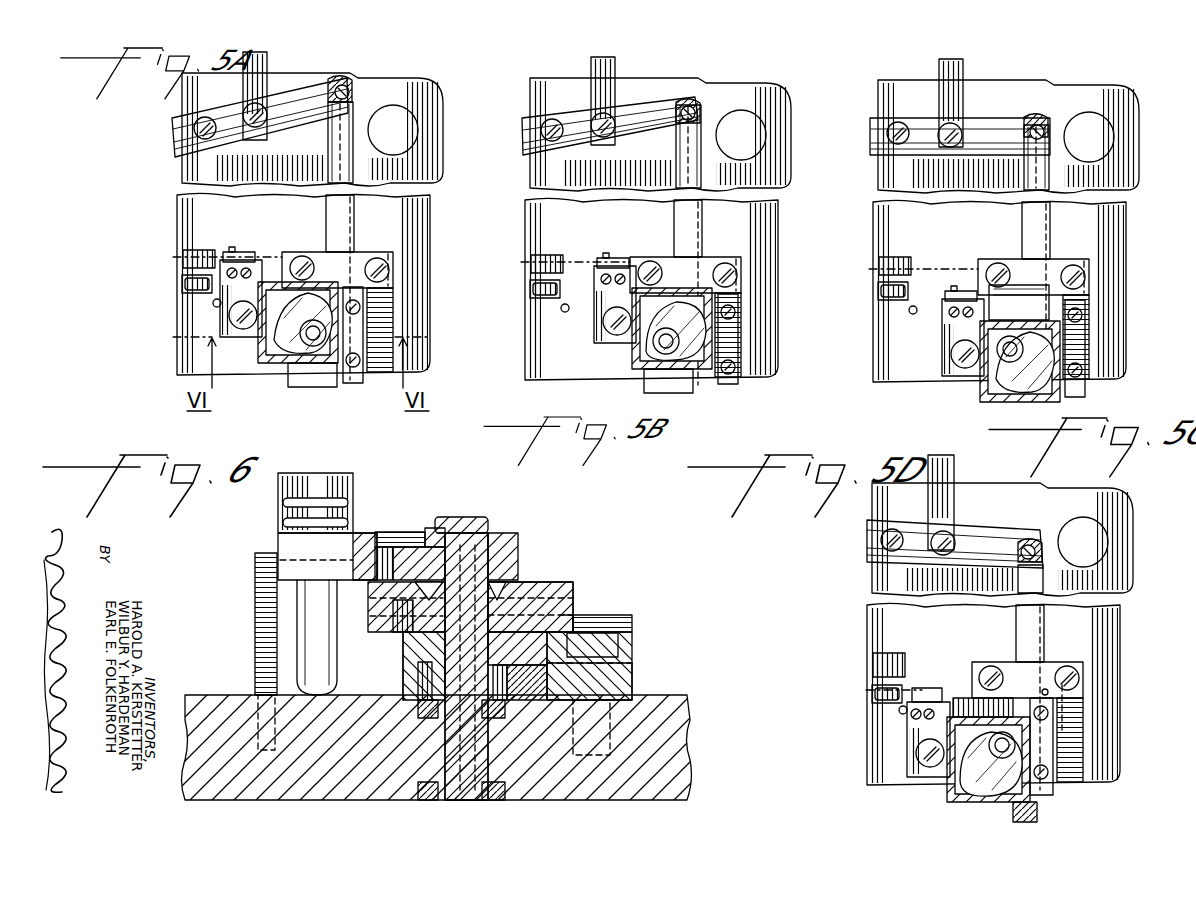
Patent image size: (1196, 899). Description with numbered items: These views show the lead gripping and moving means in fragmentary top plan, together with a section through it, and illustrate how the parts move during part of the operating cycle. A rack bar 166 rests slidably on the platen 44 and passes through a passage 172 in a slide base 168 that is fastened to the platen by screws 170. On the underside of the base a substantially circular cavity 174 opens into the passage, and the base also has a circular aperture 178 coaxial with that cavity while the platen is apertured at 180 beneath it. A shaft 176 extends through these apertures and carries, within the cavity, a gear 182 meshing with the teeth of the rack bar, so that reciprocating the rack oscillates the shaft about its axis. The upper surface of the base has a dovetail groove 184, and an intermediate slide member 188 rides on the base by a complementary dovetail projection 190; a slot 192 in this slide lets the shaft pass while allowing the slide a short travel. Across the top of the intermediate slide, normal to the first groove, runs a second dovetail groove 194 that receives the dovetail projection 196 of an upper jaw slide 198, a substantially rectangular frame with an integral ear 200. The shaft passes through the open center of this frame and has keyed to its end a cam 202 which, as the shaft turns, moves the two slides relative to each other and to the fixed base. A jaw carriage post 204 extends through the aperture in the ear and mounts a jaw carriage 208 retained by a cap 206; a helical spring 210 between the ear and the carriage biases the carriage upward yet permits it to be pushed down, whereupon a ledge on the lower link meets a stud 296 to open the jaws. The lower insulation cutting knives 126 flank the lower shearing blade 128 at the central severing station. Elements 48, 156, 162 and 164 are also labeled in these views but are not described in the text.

In FIG. 5A, the platen 44 is at (190, 191).
In FIG. 5B, the platen 44 is at (634, 229).
In FIG. 5C, the platen 44 is at (986, 231).
In FIG. 5D, the platen 44 is at (979, 634).
In FIG. 6, the platen 44 is at (685, 737).
In FIG. 5A, the bore 48 is at (398, 137).
In FIG. 5B, the bore 48 is at (750, 146).
In FIG. 5C, the bore 48 is at (1098, 147).
In FIG. 5D, the bore 48 is at (1113, 542).
In FIG. 5A, the lower insulation cutting knives 126 is at (180, 280).
In FIG. 5B, the lower insulation cutting knives 126 is at (561, 254).
In FIG. 5C, the lower insulation cutting knives 126 is at (910, 258).
In FIG. 5D, the lower insulation cutting knives 126 is at (904, 658).
In FIG. 5A, the lower shearing blade 128 is at (196, 250).
In FIG. 5B, the lower shearing blade 128 is at (525, 251).
In FIG. 5C, the lower shearing blade 128 is at (875, 252).
In FIG. 5D, the lower shearing blade 128 is at (865, 655).
In FIG. 5A, the post 156 is at (245, 108).
In FIG. 5B, the post 156 is at (584, 101).
In FIG. 5C, the post 156 is at (931, 103).
In FIG. 5D, the post 156 is at (923, 502).
In FIG. 5A, the screw 162 is at (338, 84).
In FIG. 5B, the screw 162 is at (666, 98).
In FIG. 5C, the screw 162 is at (1022, 115).
In FIG. 5D, the screw 162 is at (1011, 531).
In FIG. 5A, the bracket 164 is at (352, 74).
In FIG. 5B, the bracket 164 is at (714, 103).
In FIG. 5C, the bracket 164 is at (1061, 113).
In FIG. 5D, the bracket 164 is at (1045, 532).
In FIG. 5A, the rack bar 166 is at (332, 168).
In FIG. 5B, the rack bar 166 is at (667, 245).
In FIG. 5C, the rack bar 166 is at (1015, 256).
In FIG. 5D, the rack bar 166 is at (993, 677).
In FIG. 6, the rack bar 166 is at (540, 712).
In FIG. 5A, the slide base 168 is at (396, 296).
In FIG. 5B, the slide base 168 is at (727, 277).
In FIG. 5C, the slide base 168 is at (1075, 280).
In FIG. 5D, the slide base 168 is at (1027, 680).
In FIG. 6, the slide base 168 is at (634, 656).
In FIG. 5A, the screws 170 is at (303, 256).
In FIG. 5B, the screws 170 is at (688, 255).
In FIG. 5C, the screws 170 is at (1043, 259).
In FIG. 5D, the screws 170 is at (1034, 661).
In FIG. 6, the screws 170 is at (620, 662).
In FIG. 5A, the passage 172 is at (398, 244).
In FIG. 5B, the passage 172 is at (729, 250).
In FIG. 5C, the passage 172 is at (1075, 253).
In FIG. 5D, the passage 172 is at (1107, 701).
In FIG. 6, the passage 172 is at (510, 690).
In FIG. 6, the circular cavity 174 is at (402, 684).
In FIG. 6, the shaft 176 is at (440, 782).
In FIG. 6, the circular aperture 178 is at (512, 652).
In FIG. 6, the aperture 180 is at (494, 786).
In FIG. 6, the gear 182 is at (424, 656).
In FIG. 5A, the dovetail groove 184 is at (394, 336).
In FIG. 5B, the dovetail groove 184 is at (658, 337).
In FIG. 5C, the dovetail groove 184 is at (1120, 337).
In FIG. 5D, the dovetail groove 184 is at (1114, 740).
In FIG. 6, the dovetail groove 184 is at (632, 624).
In FIG. 6, the intermediate slide member 188 is at (574, 592).
In FIG. 6, the dovetail projection 190 is at (578, 622).
In FIG. 6, the slot 192 is at (404, 640).
In FIG. 5A, the dovetail groove 194 is at (310, 380).
In FIG. 5B, the dovetail groove 194 is at (678, 395).
In FIG. 5C, the dovetail groove 194 is at (993, 289).
In FIG. 5D, the dovetail groove 194 is at (973, 690).
In FIG. 6, the dovetail groove 194 is at (520, 590).
In FIG. 6, the dovetail projection 196 is at (400, 602).
In FIG. 5A, the jaw slide 198 is at (262, 376).
In FIG. 5B, the jaw slide 198 is at (653, 350).
In FIG. 5C, the jaw slide 198 is at (1061, 366).
In FIG. 5D, the jaw slide 198 is at (964, 767).
In FIG. 6, the jaw slide 198 is at (520, 548).
In FIG. 6, the ear 200 is at (400, 548).
In FIG. 5A, the cam 202 is at (272, 344).
In FIG. 5B, the cam 202 is at (716, 331).
In FIG. 5C, the cam 202 is at (990, 372).
In FIG. 5D, the cam 202 is at (1023, 777).
In FIG. 6, the cam 202 is at (386, 544).
In FIG. 6, the jaw carriage post 204 is at (300, 602).
In FIG. 5A, the cap 206 is at (229, 315).
In FIG. 5B, the cap 206 is at (581, 321).
In FIG. 5C, the cap 206 is at (935, 357).
In FIG. 5D, the cap 206 is at (885, 753).
In FIG. 5A, the jaw carriage 208 is at (220, 330).
In FIG. 5B, the jaw carriage 208 is at (587, 303).
In FIG. 5C, the jaw carriage 208 is at (938, 331).
In FIG. 5D, the jaw carriage 208 is at (890, 732).
In FIG. 6, the helical spring 210 is at (282, 514).
In FIG. 5B, the stud 296 is at (530, 303).
In FIG. 5C, the stud 296 is at (877, 311).
In FIG. 5D, the stud 296 is at (866, 708).
In FIG. 6, the stud 296 is at (256, 576).